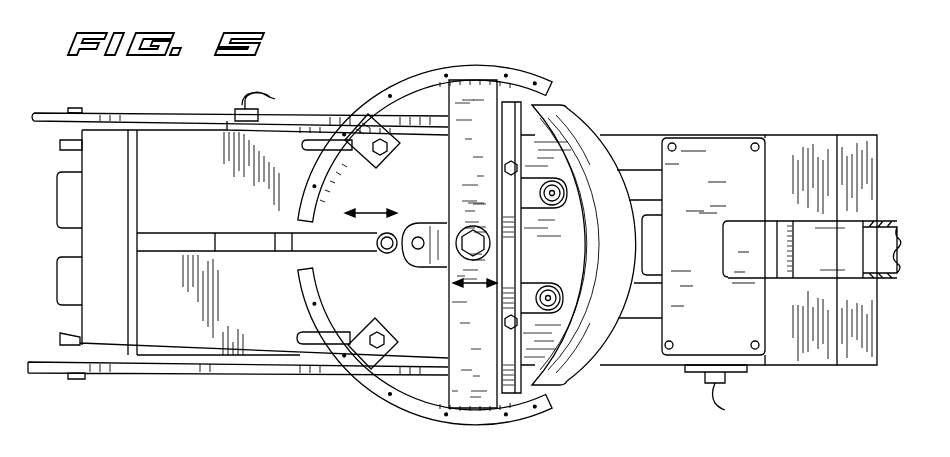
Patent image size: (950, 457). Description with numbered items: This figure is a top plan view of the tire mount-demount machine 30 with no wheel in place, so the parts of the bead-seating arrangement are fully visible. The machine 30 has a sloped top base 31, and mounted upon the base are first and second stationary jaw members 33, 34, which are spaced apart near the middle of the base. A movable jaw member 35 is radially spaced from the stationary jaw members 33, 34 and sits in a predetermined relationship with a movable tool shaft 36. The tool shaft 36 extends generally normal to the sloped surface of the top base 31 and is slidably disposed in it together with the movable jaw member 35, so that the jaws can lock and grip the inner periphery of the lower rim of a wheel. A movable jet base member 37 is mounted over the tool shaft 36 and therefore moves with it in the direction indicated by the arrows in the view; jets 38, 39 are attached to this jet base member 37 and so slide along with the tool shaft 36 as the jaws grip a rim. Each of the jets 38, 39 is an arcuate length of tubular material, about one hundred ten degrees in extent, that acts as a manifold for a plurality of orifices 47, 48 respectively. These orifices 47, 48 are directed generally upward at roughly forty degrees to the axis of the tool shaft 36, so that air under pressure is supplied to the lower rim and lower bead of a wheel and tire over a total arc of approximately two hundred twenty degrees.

The tire mount-demount machine 30 is at (809, 126).
The sloped top base 31 is at (188, 150).
The first stationary jaw member 33 is at (560, 184).
The second stationary jaw member 34 is at (563, 300).
The movable jaw member 35 is at (383, 257).
The movable tool shaft 36 is at (475, 227).
The movable jet base member 37 is at (462, 95).
The jet 38 is at (503, 73).
The jet 39 is at (527, 415).
The orifices 47 is at (353, 125).
The orifices 48 is at (437, 415).